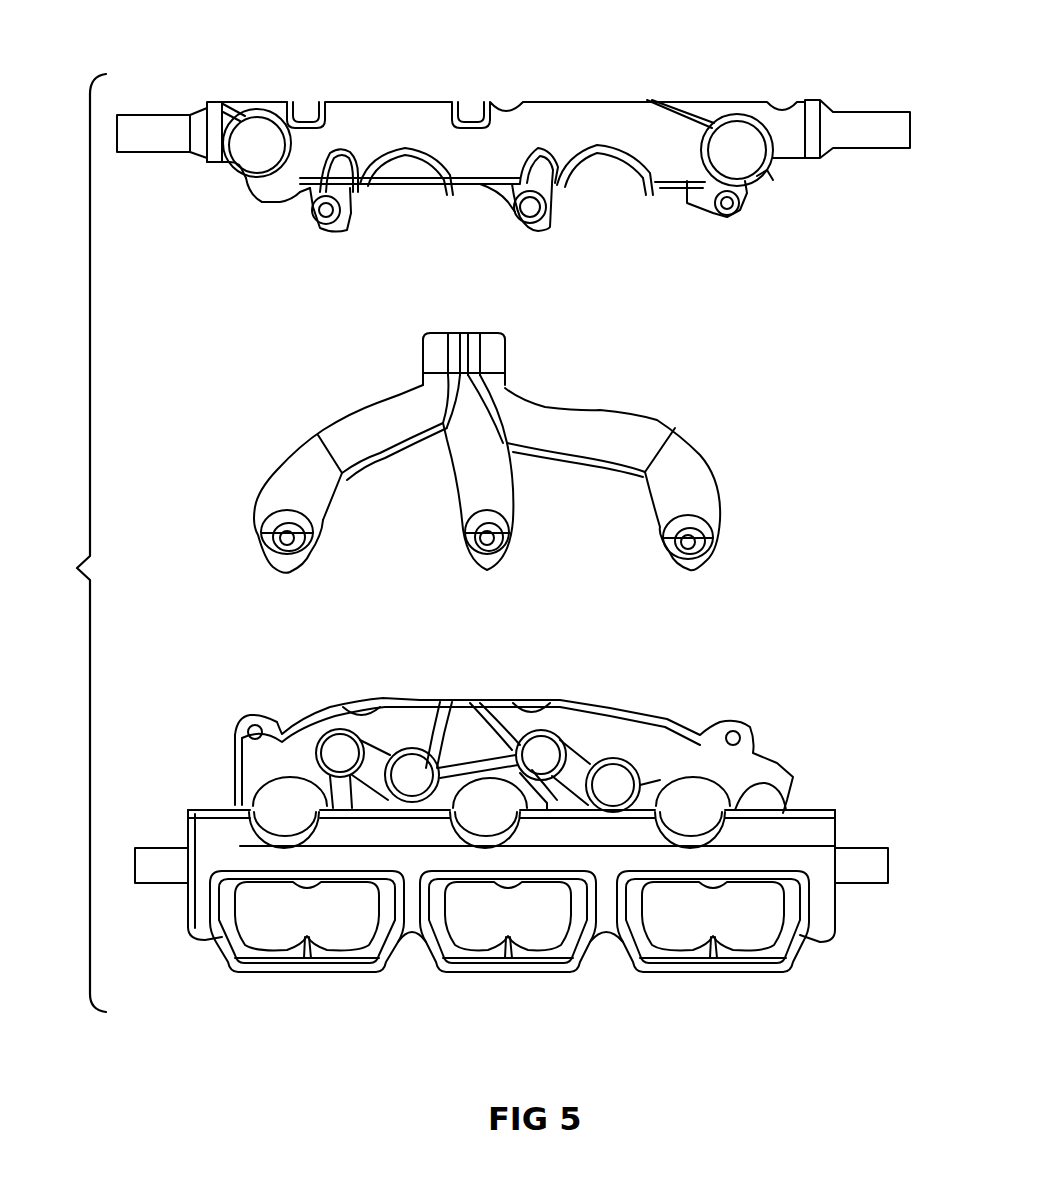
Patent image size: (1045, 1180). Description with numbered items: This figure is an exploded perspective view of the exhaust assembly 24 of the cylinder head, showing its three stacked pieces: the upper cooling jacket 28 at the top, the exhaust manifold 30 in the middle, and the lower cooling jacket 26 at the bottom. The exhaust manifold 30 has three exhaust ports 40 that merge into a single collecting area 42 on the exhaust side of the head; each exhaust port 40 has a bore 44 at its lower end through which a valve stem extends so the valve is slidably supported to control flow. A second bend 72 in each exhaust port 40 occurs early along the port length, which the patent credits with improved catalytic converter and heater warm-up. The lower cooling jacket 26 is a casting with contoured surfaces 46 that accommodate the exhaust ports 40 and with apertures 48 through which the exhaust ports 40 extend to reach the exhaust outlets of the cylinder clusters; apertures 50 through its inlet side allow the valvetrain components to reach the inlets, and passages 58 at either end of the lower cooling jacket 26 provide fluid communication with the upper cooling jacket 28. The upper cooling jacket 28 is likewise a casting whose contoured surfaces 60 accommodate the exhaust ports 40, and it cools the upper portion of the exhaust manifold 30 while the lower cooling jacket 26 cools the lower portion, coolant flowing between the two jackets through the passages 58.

The exhaust assembly 24 is at (73, 543).
The lower cooling jacket 26 is at (535, 833).
The upper cooling jacket 28 is at (513, 130).
The exhaust manifold 30 is at (499, 449).
The exhaust ports 40 is at (272, 470).
The collecting area 42 is at (420, 342).
The bore 44 is at (290, 537).
The contoured surfaces 46 is at (300, 746).
The apertures 48 is at (262, 800).
The apertures 50 is at (345, 940).
The passages 58 is at (250, 715).
The contoured surfaces 60 is at (288, 201).
The second bend 72 is at (320, 420).